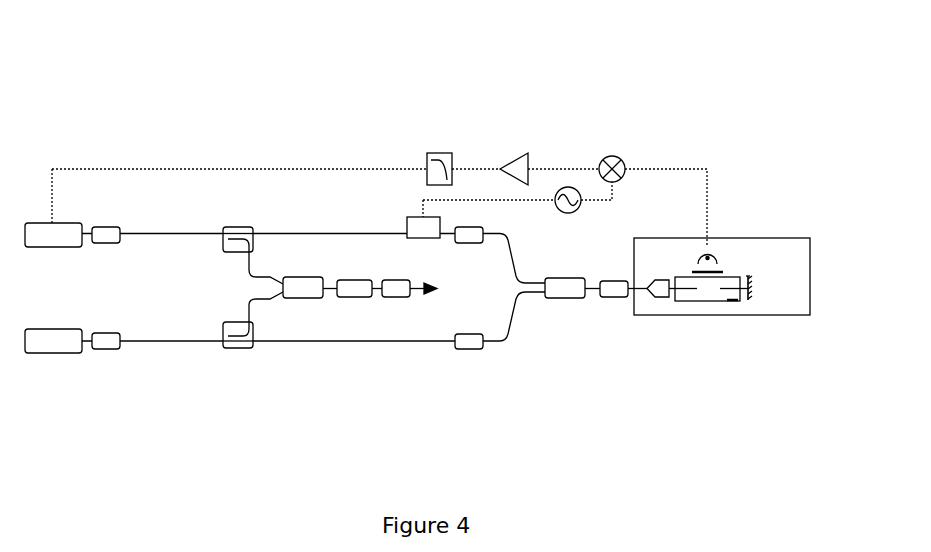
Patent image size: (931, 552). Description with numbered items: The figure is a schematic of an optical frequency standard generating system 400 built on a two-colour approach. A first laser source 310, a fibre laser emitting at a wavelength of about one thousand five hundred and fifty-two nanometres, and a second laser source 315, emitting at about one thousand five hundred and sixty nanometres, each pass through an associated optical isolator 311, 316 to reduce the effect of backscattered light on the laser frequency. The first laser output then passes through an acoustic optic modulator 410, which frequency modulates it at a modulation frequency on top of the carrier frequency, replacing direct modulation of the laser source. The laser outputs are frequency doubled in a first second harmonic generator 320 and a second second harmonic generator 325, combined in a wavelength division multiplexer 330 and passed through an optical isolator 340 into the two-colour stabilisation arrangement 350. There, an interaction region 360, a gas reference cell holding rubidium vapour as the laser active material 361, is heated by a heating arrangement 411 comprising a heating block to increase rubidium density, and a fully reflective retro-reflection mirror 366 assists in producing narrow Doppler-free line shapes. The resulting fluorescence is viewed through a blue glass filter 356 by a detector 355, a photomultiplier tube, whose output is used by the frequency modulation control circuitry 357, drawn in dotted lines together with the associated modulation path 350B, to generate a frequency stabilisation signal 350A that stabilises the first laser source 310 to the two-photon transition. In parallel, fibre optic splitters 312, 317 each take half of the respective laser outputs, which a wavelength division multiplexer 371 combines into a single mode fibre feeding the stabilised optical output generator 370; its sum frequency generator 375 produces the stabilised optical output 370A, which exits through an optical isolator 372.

The optical frequency standard generating system 400 is at (120, 120).
The first laser source 310 is at (50, 223).
The optical isolator 311 is at (118, 244).
The fibre optic splitter 312 is at (223, 233).
The second laser source 315 is at (58, 329).
The optical isolator 316 is at (118, 346).
The fibre optic splitter 317 is at (223, 323).
The stabilised optical output generator 370 is at (328, 265).
The wavelength division multiplexer 371 is at (292, 298).
The sum frequency generator 375 is at (355, 297).
The optical isolator 372 is at (390, 279).
The stabilised optical output 370A is at (470, 300).
The first second harmonic generator 320 is at (455, 245).
The second second harmonic generator 325 is at (455, 345).
The wavelength division multiplexer 330 is at (565, 300).
The optical isolator 340 is at (610, 297).
The interaction region 360 is at (733, 236).
The detector 355 is at (700, 251).
The blue glass filter 356 is at (690, 271).
The laser active material 361 is at (735, 300).
The retro-reflection mirror 366 is at (752, 286).
The heating arrangement 411 is at (746, 276).
The acoustic optic modulator 410 is at (407, 226).
The two-colour stabilisation arrangement 350 is at (685, 160).
The frequency stabilisation signal 350A is at (215, 168).
The modulation signal path 350B is at (468, 200).
The frequency modulation control circuitry 357 is at (492, 153).